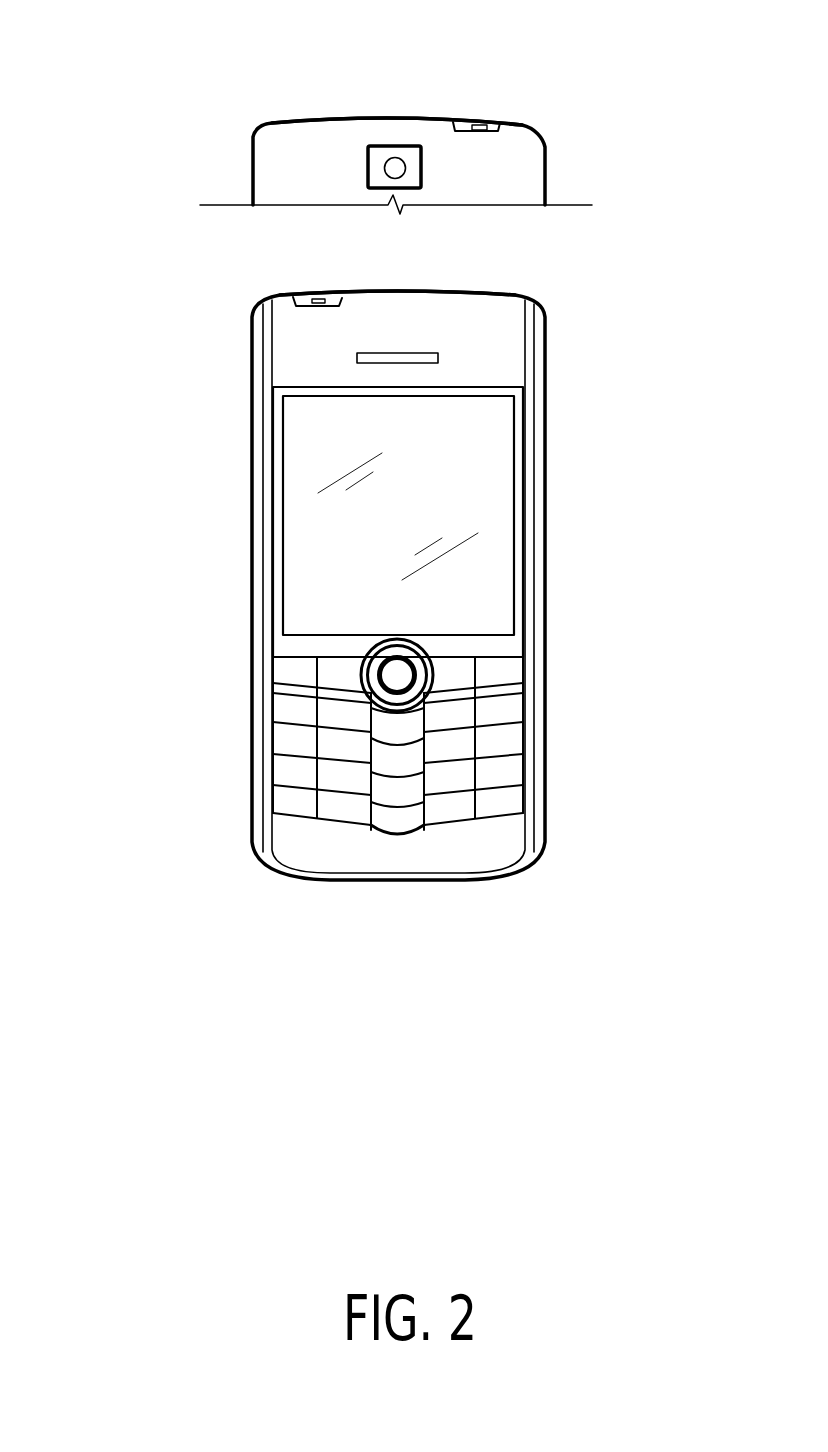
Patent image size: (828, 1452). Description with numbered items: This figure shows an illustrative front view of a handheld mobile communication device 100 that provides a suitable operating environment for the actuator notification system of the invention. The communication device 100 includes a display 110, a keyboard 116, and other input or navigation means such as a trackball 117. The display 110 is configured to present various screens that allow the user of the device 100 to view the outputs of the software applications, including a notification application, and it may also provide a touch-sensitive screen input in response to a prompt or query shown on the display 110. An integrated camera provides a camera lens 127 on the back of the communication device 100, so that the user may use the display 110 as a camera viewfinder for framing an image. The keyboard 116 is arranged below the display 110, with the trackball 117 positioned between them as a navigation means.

The mobile communication device 100 is at (473, 1093).
The display 110 is at (475, 483).
The keyboard 116 is at (420, 875).
The trackball 117 is at (397, 675).
The camera lens 127 is at (393, 145).